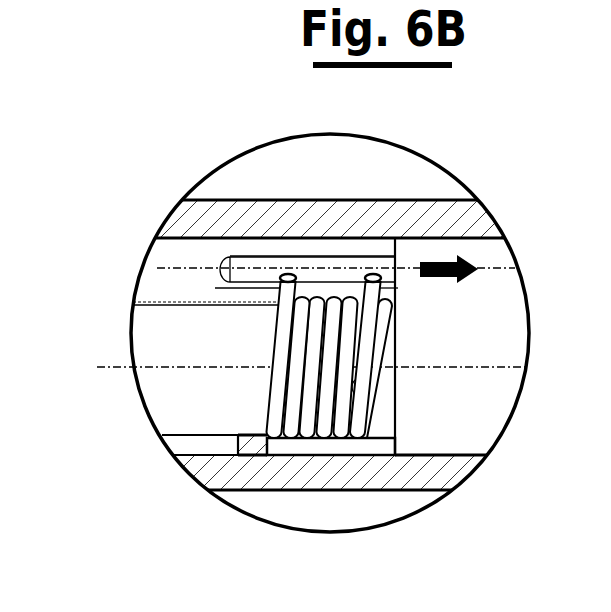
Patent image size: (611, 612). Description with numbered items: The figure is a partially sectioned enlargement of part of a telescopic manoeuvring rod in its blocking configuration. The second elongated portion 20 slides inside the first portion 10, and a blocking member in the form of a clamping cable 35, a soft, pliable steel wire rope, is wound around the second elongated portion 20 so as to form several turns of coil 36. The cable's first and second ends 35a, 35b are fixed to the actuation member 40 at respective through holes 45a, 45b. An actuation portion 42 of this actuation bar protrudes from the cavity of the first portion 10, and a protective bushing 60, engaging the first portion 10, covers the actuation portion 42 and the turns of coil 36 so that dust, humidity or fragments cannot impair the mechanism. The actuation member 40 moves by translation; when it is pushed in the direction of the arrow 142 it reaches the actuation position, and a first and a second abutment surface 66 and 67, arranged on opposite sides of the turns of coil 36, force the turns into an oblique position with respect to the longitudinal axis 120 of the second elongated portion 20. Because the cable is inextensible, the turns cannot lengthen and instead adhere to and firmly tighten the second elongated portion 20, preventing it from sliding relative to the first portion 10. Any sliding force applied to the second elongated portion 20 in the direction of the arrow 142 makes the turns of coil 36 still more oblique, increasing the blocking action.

The first portion 10 is at (480, 393).
The second elongated portion 20 is at (150, 387).
The clamping cable 35 is at (262, 382).
The first end of the clamping cable 35a is at (398, 287).
The second end of the clamping cable 35b is at (215, 288).
The turn of coil 36 is at (275, 440).
The actuation member 40 is at (220, 260).
The actuation portion 42 is at (335, 245).
The through hole 45a is at (373, 272).
The through hole 45b is at (283, 273).
The protective bushing 60 is at (298, 205).
The first abutment surface 66 is at (232, 440).
The second abutment surface 67 is at (363, 393).
The longitudinal axis 120 is at (115, 368).
The second direction 142 is at (458, 259).